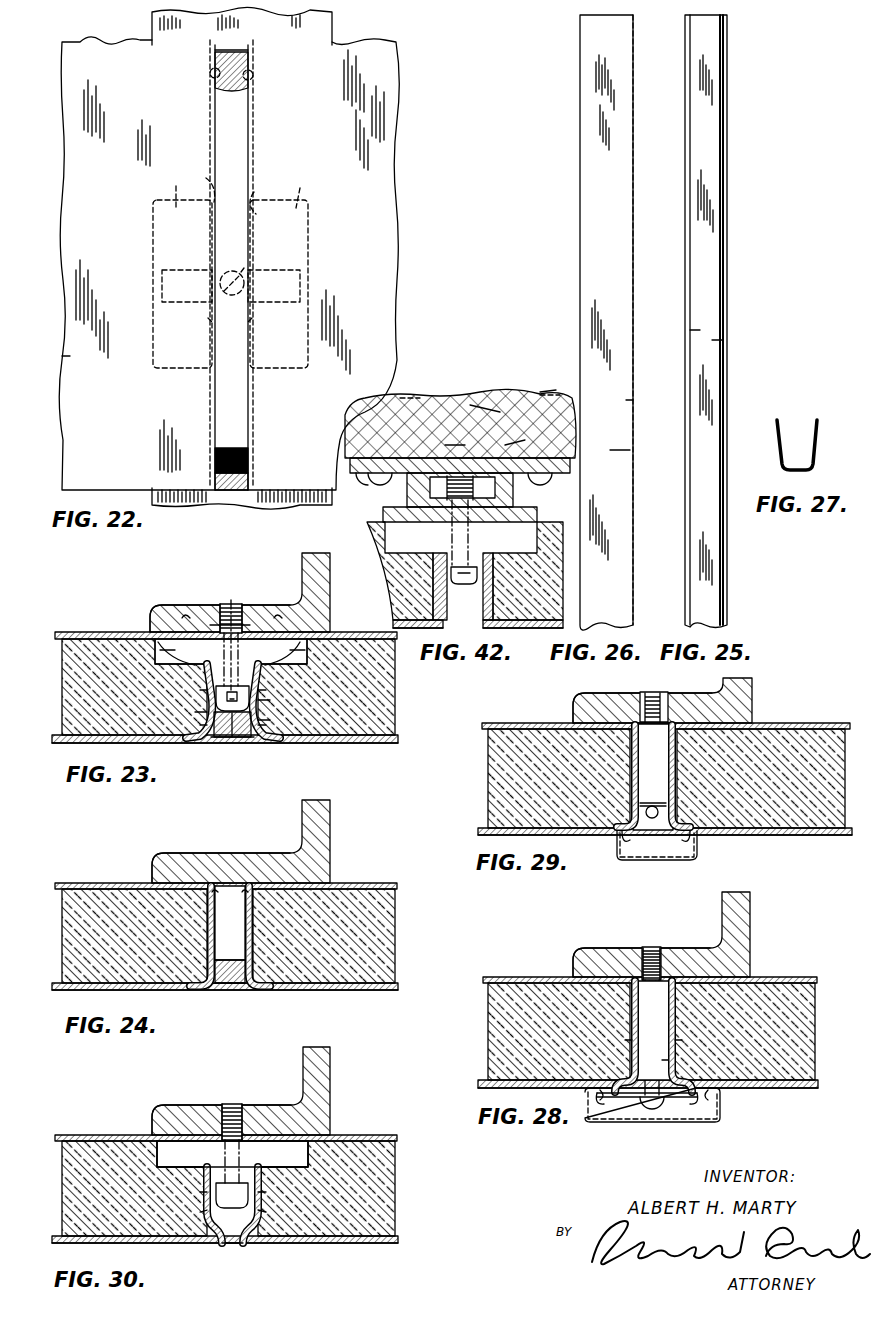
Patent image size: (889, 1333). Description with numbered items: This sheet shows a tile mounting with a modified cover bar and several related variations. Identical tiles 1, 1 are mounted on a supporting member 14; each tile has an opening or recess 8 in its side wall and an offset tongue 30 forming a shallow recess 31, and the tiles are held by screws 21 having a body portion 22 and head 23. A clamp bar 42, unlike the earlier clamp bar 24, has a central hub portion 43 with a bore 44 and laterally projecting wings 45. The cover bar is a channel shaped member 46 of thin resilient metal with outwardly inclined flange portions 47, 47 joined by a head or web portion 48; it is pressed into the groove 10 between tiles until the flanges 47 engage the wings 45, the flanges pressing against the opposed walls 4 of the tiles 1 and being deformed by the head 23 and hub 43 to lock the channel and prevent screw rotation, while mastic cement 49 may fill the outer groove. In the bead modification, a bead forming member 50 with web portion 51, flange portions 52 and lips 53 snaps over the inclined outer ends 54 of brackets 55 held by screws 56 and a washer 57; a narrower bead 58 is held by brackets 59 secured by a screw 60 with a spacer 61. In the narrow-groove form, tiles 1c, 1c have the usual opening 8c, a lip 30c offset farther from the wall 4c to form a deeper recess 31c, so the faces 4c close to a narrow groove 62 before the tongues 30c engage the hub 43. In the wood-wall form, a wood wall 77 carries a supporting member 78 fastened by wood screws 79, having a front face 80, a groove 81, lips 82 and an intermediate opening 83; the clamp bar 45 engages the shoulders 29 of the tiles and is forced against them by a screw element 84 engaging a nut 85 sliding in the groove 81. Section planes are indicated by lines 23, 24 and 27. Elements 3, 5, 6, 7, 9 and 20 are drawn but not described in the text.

In FIG. 22, the tile 1 is at (54, 266).
In FIG. 23, the tile 1 is at (56, 746).
In FIG. 24, the tile 1 is at (57, 1002).
In FIG. 42, the tile 1 is at (414, 630).
In FIG. 29, the tile 1 is at (468, 846).
In FIG. 28, the tile 1 is at (468, 1098).
In FIG. 30, the tile 1c is at (392, 1272).
In FIG. 22, the inner panel skin 3 is at (62, 357).
In FIG. 23, the inner panel skin 3 is at (100, 743).
In FIG. 24, the inner panel skin 3 is at (190, 990).
In FIG. 30, the inner panel skin 3 is at (168, 1243).
In FIG. 29, the inner panel skin 3 is at (580, 835).
In FIG. 28, the inner panel skin 3 is at (754, 1090).
In FIG. 22, the wall of tile 4 is at (210, 119).
In FIG. 23, the wall of tile 4 is at (200, 742).
In FIG. 24, the wall of tile 4 is at (207, 972).
In FIG. 42, the wall of tile 4 is at (463, 586).
In FIG. 29, the wall of tile 4 is at (630, 778).
In FIG. 30, the wall of tile 4c is at (264, 1262).
In FIG. 23, the outer panel skin 5 is at (62, 632).
In FIG. 24, the outer panel skin 5 is at (100, 883).
In FIG. 30, the outer panel skin 5 is at (78, 1135).
In FIG. 29, the outer panel skin 5 is at (500, 723).
In FIG. 28, the outer panel skin 5 is at (498, 977).
In FIG. 23, the clamping strip 6 is at (175, 612).
In FIG. 24, the clamping strip 6 is at (186, 870).
In FIG. 30, the clamping strip 6 is at (178, 1122).
In FIG. 29, the clamping strip 6 is at (600, 710).
In FIG. 28, the clamping strip 6 is at (606, 960).
In FIG. 23, the panel core 7 is at (62, 686).
In FIG. 24, the panel core 7 is at (62, 930).
In FIG. 30, the panel core 7 is at (62, 1186).
In FIG. 29, the panel core 7 is at (488, 768).
In FIG. 28, the panel core 7 is at (494, 1020).
In FIG. 22, the opening or recess 8 is at (204, 218).
In FIG. 23, the opening or recess 8 is at (200, 660).
In FIG. 30, the opening 8c is at (310, 1174).
In FIG. 22, the recess 9 is at (238, 185).
In FIG. 23, the recess 9 is at (150, 660).
In FIG. 30, the recess 9 is at (152, 1156).
In FIG. 22, the groove 10 is at (232, 45).
In FIG. 23, the groove 10 is at (226, 744).
In FIG. 24, the groove 10 is at (216, 912).
In FIG. 29, the groove 10 is at (640, 758).
In FIG. 28, the groove 10 is at (664, 1060).
In FIG. 22, the supporting member 14 is at (332, 22).
In FIG. 23, the supporting member 14 is at (325, 565).
In FIG. 24, the supporting member 14 is at (328, 818).
In FIG. 30, the supporting member 14 is at (328, 1086).
In FIG. 42, the supporting member 14 is at (451, 584).
In FIG. 29, the supporting member 14 is at (752, 690).
In FIG. 28, the supporting member 14 is at (752, 924).
In FIG. 23, the nut 20 is at (250, 612).
In FIG. 30, the nut 20 is at (220, 1104).
In FIG. 22, the screw 21 is at (248, 268).
In FIG. 23, the screw 21 is at (231, 600).
In FIG. 30, the screw 21 is at (232, 1104).
In FIG. 23, the body portion 22 is at (218, 612).
In FIG. 22, the head 23 is at (163, 288).
In FIG. 23, the head 23 is at (240, 744).
In FIG. 22, the clamp bar 24 is at (160, 420).
In FIG. 25, the section line 27- 27 is at (678, 552).
In FIG. 23, the shoulders 29 is at (232, 600).
In FIG. 42, the shoulders 29 is at (400, 530).
In FIG. 22, the offset tongue 30 is at (208, 318).
In FIG. 23, the offset tongue 30 is at (202, 690).
In FIG. 30, the lip 30c is at (288, 1212).
In FIG. 22, the shallow recess 31 is at (206, 178).
In FIG. 23, the shallow recess 31 is at (200, 726).
In FIG. 30, the deeper recess 31c is at (284, 1192).
In FIG. 22, the clamp bar 42 is at (245, 282).
In FIG. 23, the clamp bar 42 is at (185, 625).
In FIG. 30, the clamp bar 42 is at (258, 1104).
In FIG. 23, the hub portion 43 is at (160, 652).
In FIG. 30, the hub portion 43 is at (178, 1140).
In FIG. 23, the bore 44 is at (298, 652).
In FIG. 22, the wings 45 is at (170, 270).
In FIG. 23, the wings 45 is at (155, 632).
In FIG. 42, the wings 45 is at (390, 580).
In FIG. 22, the channel shaped member 46 is at (215, 52).
In FIG. 23, the channel shaped member 46 is at (272, 745).
In FIG. 24, the channel shaped member 46 is at (250, 972).
In FIG. 26, the channel shaped member 46 is at (633, 272).
In FIG. 25, the channel shaped member 46 is at (734, 290).
In FIG. 27, the channel shaped member 46 is at (778, 460).
In FIG. 22, the flange portions 47 is at (210, 77).
In FIG. 23, the flange portions 47 is at (195, 714).
In FIG. 24, the flange portions 47 is at (208, 952).
In FIG. 26, the flange portions 47 is at (612, 450).
In FIG. 25, the flange portions 47 is at (690, 330).
In FIG. 27, the flange portions 47 is at (778, 436).
In FIG. 22, the head or web portion 48 is at (240, 66).
In FIG. 23, the head or web portion 48 is at (214, 744).
In FIG. 24, the head or web portion 48 is at (218, 990).
In FIG. 26, the head or web portion 48 is at (633, 400).
In FIG. 25, the head or web portion 48 is at (724, 333).
In FIG. 27, the head or web portion 48 is at (808, 470).
In FIG. 22, the mastic cement 49 is at (235, 396).
In FIG. 23, the mastic cement 49 is at (242, 744).
In FIG. 24, the mastic cement 49 is at (246, 990).
In FIG. 28, the bead forming member 50 is at (668, 1124).
In FIG. 28, the web portion 51 is at (628, 1124).
In FIG. 28, the flange portions 52 is at (596, 1124).
In FIG. 28, the lips 53 is at (610, 1074).
In FIG. 28, the inclined outer ends 54 is at (590, 1084).
In FIG. 28, the bracket 55 is at (632, 1072).
In FIG. 28, the screw 56 is at (654, 948).
In FIG. 28, the washer 57 is at (684, 1110).
In FIG. 29, the bead 58 is at (680, 860).
In FIG. 29, the bracket 59 is at (642, 858).
In FIG. 29, the screw 60 is at (672, 812).
In FIG. 29, the spacer 61 is at (640, 800).
In FIG. 30, the narrow groove 62 is at (232, 1246).
In FIG. 42, the wood wall 77 is at (508, 392).
In FIG. 42, the supporting member 78 is at (460, 423).
In FIG. 42, the wood screws 79 is at (405, 398).
In FIG. 42, the front face 80 is at (400, 530).
In FIG. 42, the groove 81 is at (516, 438).
In FIG. 42, the lips 82 is at (400, 480).
In FIG. 42, the intermediate opening 83 is at (452, 440).
In FIG. 42, the screw element 84 is at (464, 586).
In FIG. 42, the nut 85 is at (487, 408).